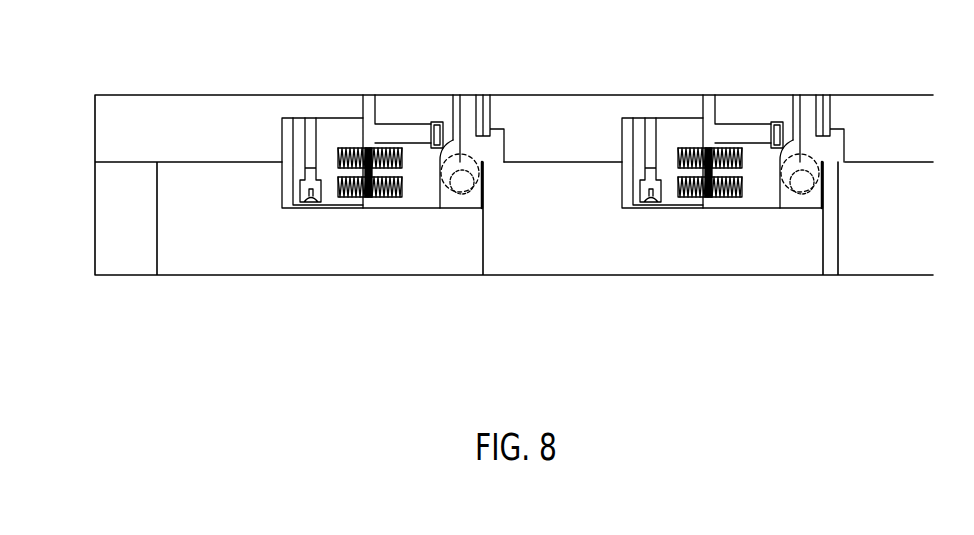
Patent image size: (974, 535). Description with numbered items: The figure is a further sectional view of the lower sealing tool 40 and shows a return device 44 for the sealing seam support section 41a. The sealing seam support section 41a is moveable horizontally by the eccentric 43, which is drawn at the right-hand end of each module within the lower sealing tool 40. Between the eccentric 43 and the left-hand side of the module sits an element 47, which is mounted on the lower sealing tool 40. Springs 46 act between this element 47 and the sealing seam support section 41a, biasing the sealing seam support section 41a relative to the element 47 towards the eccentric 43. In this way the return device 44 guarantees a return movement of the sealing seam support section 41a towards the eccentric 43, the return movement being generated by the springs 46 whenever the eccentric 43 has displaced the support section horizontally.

The lower sealing tool 40 is at (107, 218).
The return device 44 is at (385, 72).
The element 47 is at (343, 128).
The sealing seam support section 41a is at (417, 103).
The springs 46 is at (352, 195).
The eccentric 43 is at (453, 143).